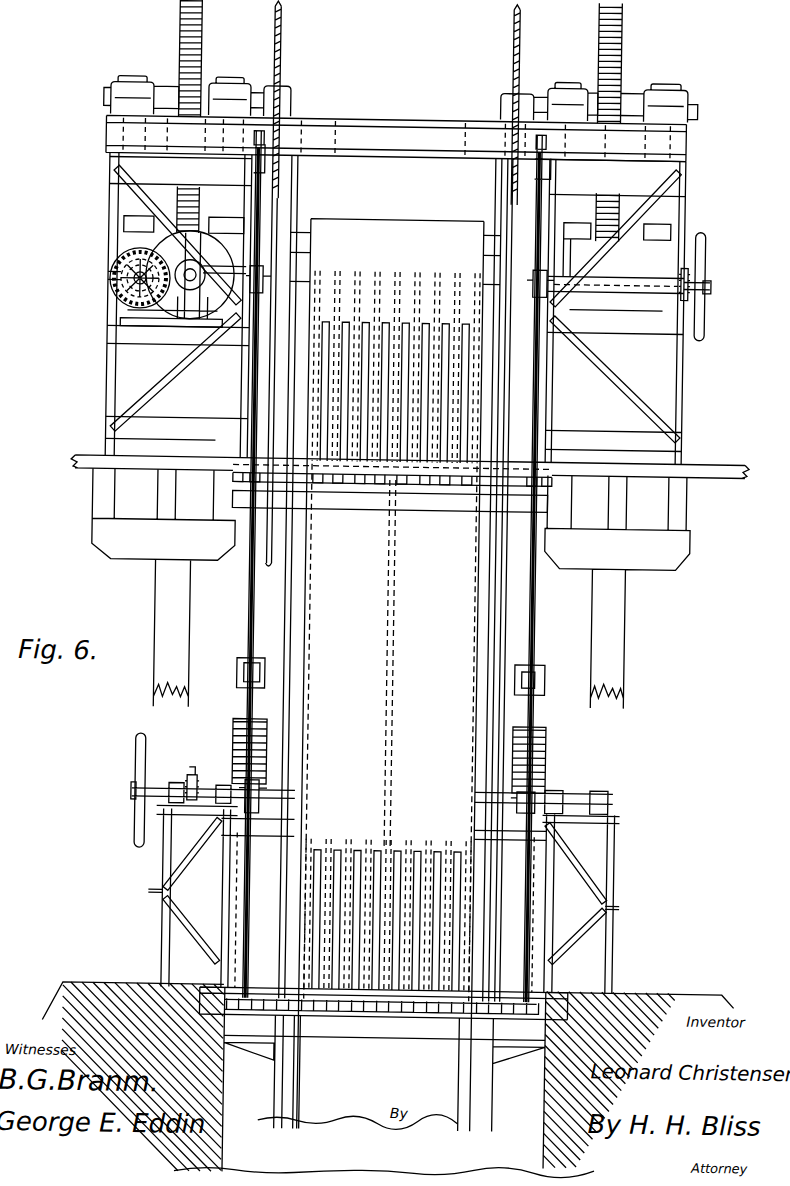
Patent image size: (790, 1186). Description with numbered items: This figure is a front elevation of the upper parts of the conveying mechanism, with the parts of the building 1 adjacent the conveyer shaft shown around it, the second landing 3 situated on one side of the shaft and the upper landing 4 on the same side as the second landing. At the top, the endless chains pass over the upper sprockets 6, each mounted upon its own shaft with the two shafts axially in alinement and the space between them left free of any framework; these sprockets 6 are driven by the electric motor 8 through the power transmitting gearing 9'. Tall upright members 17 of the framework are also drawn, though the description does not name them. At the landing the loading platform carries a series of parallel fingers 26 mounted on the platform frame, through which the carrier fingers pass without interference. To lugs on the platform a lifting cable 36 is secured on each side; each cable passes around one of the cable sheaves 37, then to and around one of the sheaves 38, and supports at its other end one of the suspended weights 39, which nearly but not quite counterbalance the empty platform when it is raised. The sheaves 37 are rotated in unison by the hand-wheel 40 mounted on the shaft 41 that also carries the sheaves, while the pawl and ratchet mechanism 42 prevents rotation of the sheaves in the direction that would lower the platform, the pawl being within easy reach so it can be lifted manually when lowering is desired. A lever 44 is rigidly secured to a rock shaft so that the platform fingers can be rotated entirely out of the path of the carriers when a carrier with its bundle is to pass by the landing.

The parts of the building 1 is at (240, 1118).
The second landing 3 is at (680, 986).
The upper landing 4 is at (705, 462).
The sprockets 6 is at (277, 57).
The electric motor 8 is at (154, 289).
The power transmitting gearing 9' is at (400, 120).
The upright post 17 is at (287, 575).
The parallel fingers 26 is at (406, 476).
The lifting cable 36 is at (254, 402).
The cable sheaves 37 is at (259, 293).
The sheaves 38 is at (255, 663).
The suspended weights 39 is at (540, 782).
The hand-wheel 40 is at (700, 323).
The shaft 41 is at (530, 283).
The pawl and ratchet mechanism 42 is at (684, 271).
The lever 44 is at (262, 415).